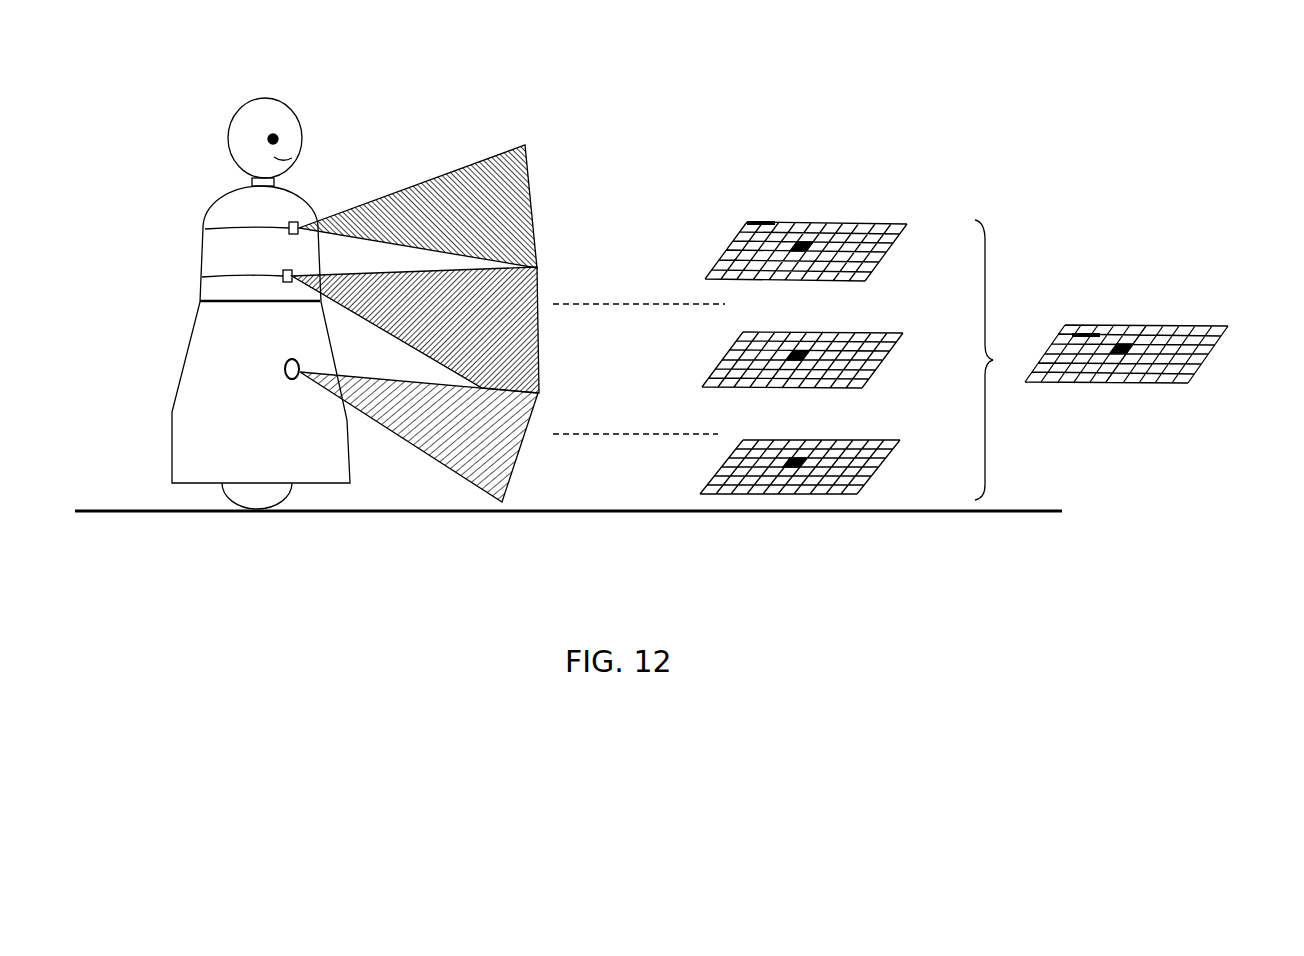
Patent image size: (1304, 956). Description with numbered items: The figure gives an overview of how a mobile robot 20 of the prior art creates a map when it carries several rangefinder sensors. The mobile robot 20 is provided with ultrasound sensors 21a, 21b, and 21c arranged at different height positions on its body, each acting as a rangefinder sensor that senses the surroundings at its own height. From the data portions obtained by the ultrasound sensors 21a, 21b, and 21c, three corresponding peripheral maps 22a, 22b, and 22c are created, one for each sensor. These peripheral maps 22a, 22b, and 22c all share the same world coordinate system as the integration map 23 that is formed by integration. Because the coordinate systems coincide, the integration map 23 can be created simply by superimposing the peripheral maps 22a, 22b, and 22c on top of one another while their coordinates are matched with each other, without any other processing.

The mobile robot 20 is at (205, 128).
The ultrasound sensor 21a is at (289, 228).
The ultrasound sensor 21b is at (283, 276).
The ultrasound sensor 21c is at (283, 366).
The peripheral map 22a is at (793, 223).
The peripheral map 22b is at (807, 332).
The peripheral map 22c is at (812, 441).
The integration map 23 is at (1110, 325).